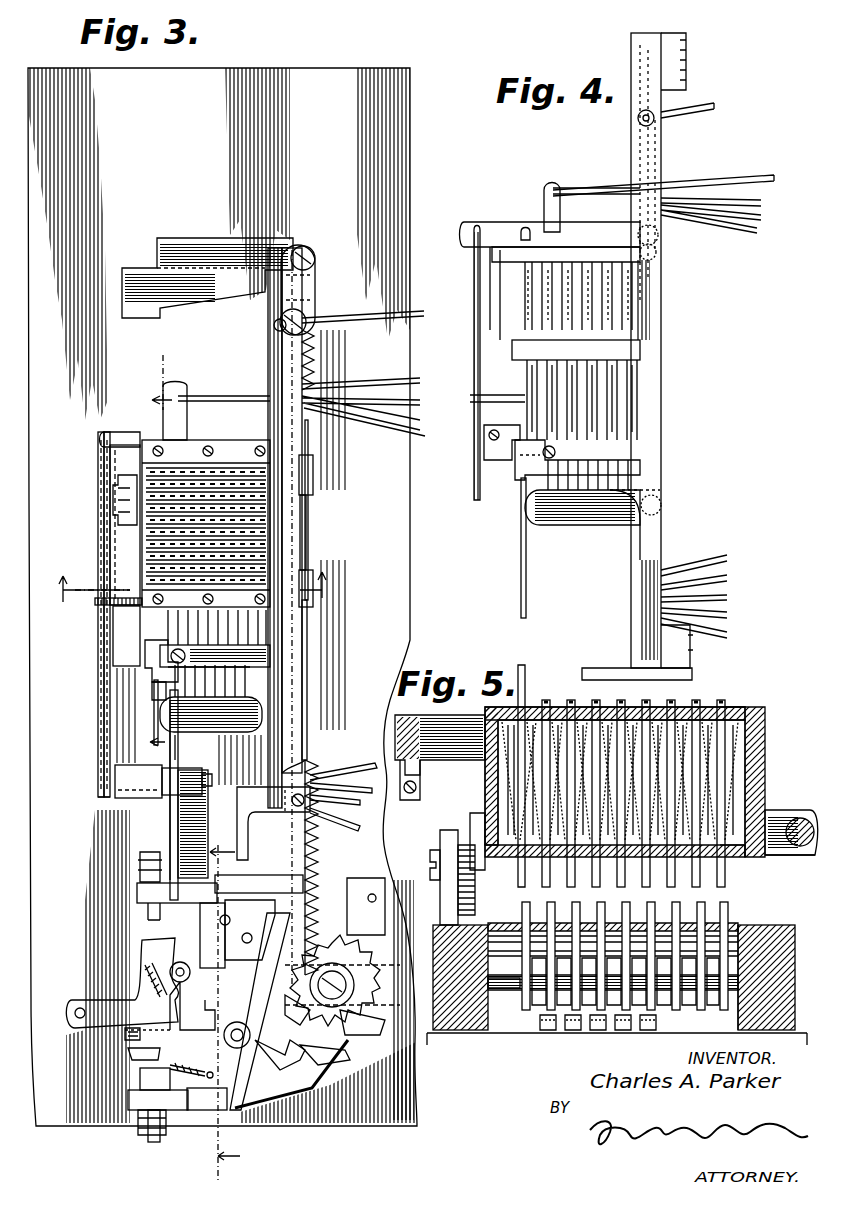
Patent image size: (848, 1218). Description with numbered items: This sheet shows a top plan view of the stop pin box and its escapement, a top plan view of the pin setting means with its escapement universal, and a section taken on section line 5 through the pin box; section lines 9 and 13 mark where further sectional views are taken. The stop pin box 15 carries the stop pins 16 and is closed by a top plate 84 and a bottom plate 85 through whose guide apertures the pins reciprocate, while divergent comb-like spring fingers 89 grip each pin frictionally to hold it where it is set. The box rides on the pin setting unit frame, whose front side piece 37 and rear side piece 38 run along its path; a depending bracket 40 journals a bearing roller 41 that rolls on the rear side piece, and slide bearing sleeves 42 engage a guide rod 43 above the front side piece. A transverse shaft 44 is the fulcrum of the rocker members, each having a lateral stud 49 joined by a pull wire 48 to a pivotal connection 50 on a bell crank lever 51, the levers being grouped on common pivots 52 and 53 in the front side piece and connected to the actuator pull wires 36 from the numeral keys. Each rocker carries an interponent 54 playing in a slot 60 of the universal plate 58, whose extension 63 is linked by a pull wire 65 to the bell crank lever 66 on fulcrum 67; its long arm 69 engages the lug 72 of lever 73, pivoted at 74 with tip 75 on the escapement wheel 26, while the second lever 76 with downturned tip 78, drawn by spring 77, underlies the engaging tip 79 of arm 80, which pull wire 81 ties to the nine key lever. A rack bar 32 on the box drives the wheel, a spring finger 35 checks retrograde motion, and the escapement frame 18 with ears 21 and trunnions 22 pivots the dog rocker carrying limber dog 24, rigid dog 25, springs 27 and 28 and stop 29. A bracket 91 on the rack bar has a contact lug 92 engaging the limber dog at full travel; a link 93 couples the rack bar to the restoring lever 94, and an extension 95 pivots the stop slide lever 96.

In FIG. 3, the section line 5- 5 is at (184, 578).
In FIG. 3, the section line 9- 9 is at (167, 557).
In FIG. 3, the section line 13- 13 is at (225, 1014).
In FIG. 3, the stop pin box 15 is at (138, 538).
In FIG. 5, the stop pin box 15 is at (767, 775).
In FIG. 5, the stop pins 16 is at (580, 700).
In FIG. 3, the escapement frame 18 is at (206, 1099).
In FIG. 3, the upright ears 21 is at (137, 887).
In FIG. 3, the trunnions 22 is at (140, 862).
In FIG. 3, the limber dog 24 is at (240, 985).
In FIG. 3, the rigid dog 25 is at (306, 1005).
In FIG. 3, the escapement wheel 26 is at (375, 1035).
In FIG. 3, the contractile spring 27 is at (150, 992).
In FIG. 3, the contractile spring 28 is at (170, 1112).
In FIG. 3, the stop 29 is at (237, 934).
In FIG. 3, the rack bar 32 is at (318, 863).
In FIG. 3, the spring finger 35 is at (318, 1080).
In FIG. 3, the actuator instrumentalities 36 is at (345, 325).
In FIG. 4, the actuator instrumentalities 36 is at (692, 110).
In FIG. 3, the front side piece 37 is at (303, 678).
In FIG. 4, the front side piece 37 is at (655, 375).
In FIG. 5, the front side piece 37 is at (795, 925).
In FIG. 3, the rear side piece 38 is at (124, 648).
In FIG. 5, the rear side piece 38 is at (468, 1020).
In FIG. 5, the depending bracket 40 is at (478, 815).
In FIG. 3, the bearing roller 41 is at (113, 508).
In FIG. 5, the bearing roller 41 is at (448, 856).
In FIG. 3, the slide bearing sleeves 42 is at (313, 478).
In FIG. 5, the slide bearing sleeves 42 is at (785, 852).
In FIG. 3, the guide rod 43 is at (306, 525).
In FIG. 5, the guide rod 43 is at (782, 815).
In FIG. 3, the shaft 44 is at (98, 605).
In FIG. 5, the shaft 44 is at (505, 990).
In FIG. 3, the pull wire 48 is at (222, 686).
In FIG. 4, the pull wire 48 is at (610, 280).
In FIG. 5, the lateral stud 49 is at (590, 1036).
In FIG. 4, the pivotal connection 50 is at (521, 230).
In FIG. 3, the bell crank lever 51 is at (268, 357).
In FIG. 4, the bell crank lever 51 is at (631, 145).
In FIG. 4, the common pivot 52 is at (656, 258).
In FIG. 4, the common pivot 53 is at (662, 506).
In FIG. 5, the interponent 54 is at (680, 920).
In FIG. 3, the universal plate 58 is at (270, 654).
In FIG. 4, the universal plate 58 is at (517, 352).
In FIG. 3, the slots 60 is at (160, 665).
In FIG. 4, the slots 60 is at (470, 402).
In FIG. 3, the extension 63 is at (152, 690).
In FIG. 4, the extension 63 is at (515, 470).
In FIG. 3, the pull wire 65 is at (154, 738).
In FIG. 4, the pull wire 65 is at (521, 542).
In FIG. 3, the bell crank lever 66 is at (98, 800).
In FIG. 3, the fulcrum 67 is at (214, 780).
In FIG. 3, the long arm 69 is at (176, 832).
In FIG. 3, the lug 72 is at (147, 1003).
In FIG. 3, the lever 73 is at (288, 1055).
In FIG. 3, the pivot 74 is at (250, 1048).
In FIG. 3, the tip 75 is at (362, 1022).
In FIG. 3, the second lever 76 is at (337, 931).
In FIG. 3, the contractile spring 77 is at (150, 1058).
In FIG. 3, the downturned tip 78 is at (298, 945).
In FIG. 3, the engaging tip 79 is at (125, 1028).
In FIG. 3, the arm of second bell crank lever 80 is at (178, 818).
In FIG. 3, the pull wire 81 is at (100, 710).
In FIG. 4, the pull wire 81 is at (474, 283).
In FIG. 5, the top plate 84 is at (735, 707).
In FIG. 5, the bottom plate 85 is at (735, 850).
In FIG. 5, the spring fingers 89 is at (700, 760).
In FIG. 3, the bracket 91 is at (240, 808).
In FIG. 3, the contact lug 92 is at (250, 880).
In FIG. 3, the link 93 is at (312, 280).
In FIG. 3, the restoring lever 94 is at (200, 240).
In FIG. 3, the extension 95 is at (112, 432).
In FIG. 3, the stop slide lever 96 is at (98, 555).